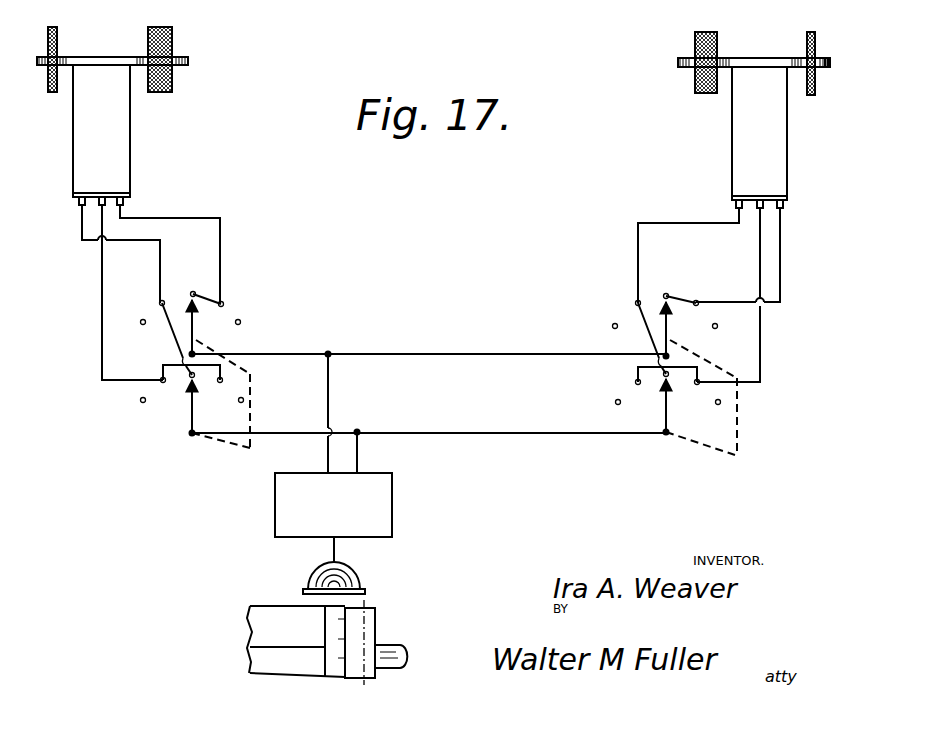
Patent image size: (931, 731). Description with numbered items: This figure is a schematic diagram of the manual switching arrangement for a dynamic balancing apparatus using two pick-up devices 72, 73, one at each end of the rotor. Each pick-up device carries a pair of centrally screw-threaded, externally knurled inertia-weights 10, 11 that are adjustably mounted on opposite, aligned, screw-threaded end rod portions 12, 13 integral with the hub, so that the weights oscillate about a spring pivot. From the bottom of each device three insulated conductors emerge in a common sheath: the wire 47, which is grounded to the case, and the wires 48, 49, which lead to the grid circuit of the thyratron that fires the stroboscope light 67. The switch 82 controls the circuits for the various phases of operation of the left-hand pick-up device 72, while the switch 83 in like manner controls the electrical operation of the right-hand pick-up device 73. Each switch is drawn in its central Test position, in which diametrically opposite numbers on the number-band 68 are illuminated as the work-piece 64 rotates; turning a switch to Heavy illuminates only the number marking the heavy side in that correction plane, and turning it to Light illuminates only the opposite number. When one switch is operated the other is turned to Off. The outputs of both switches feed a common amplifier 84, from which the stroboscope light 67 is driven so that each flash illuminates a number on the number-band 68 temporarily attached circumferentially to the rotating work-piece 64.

The inertia-weight 10 is at (170, 35).
The inertia-weight 11 is at (58, 33).
The end rod portion 12 is at (678, 61).
The end rod portion 13 is at (827, 57).
The wire 47 is at (102, 318).
The wire 48 is at (135, 242).
The wire 49 is at (213, 220).
The work-piece 64 is at (265, 619).
The stroboscope light 67 is at (307, 580).
The number-band 68 is at (260, 647).
The pick-up device 72 is at (118, 158).
The pick-up device 73 is at (742, 137).
The switch 82 is at (196, 326).
The switch 83 is at (662, 326).
The amplifier 84 is at (293, 530).